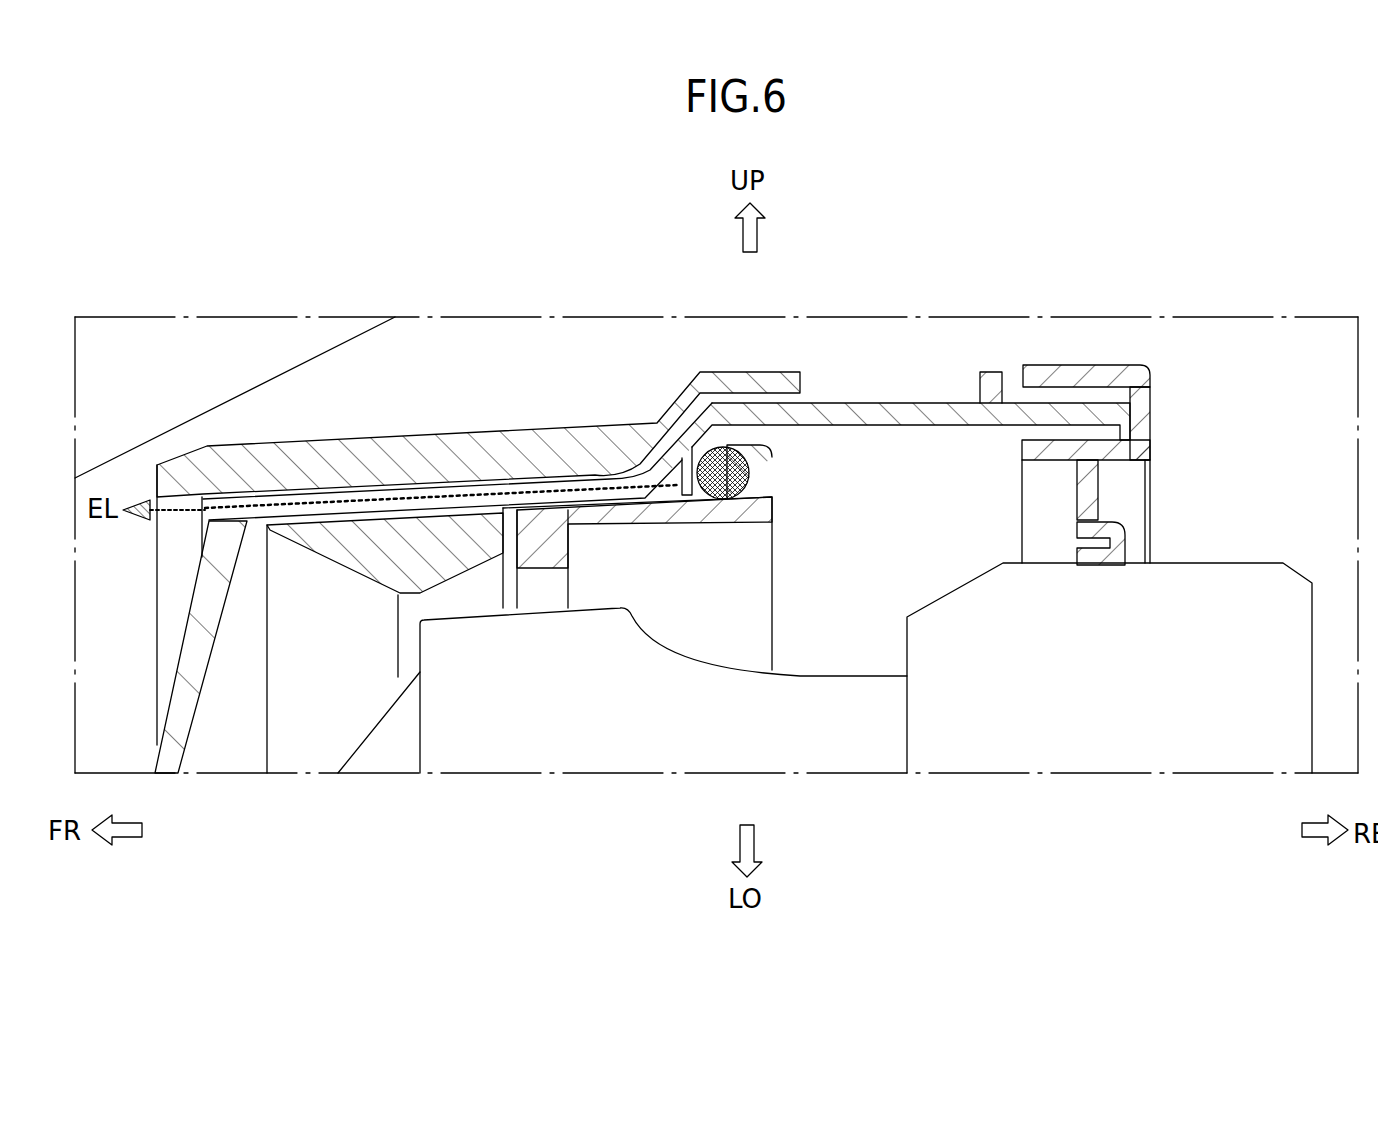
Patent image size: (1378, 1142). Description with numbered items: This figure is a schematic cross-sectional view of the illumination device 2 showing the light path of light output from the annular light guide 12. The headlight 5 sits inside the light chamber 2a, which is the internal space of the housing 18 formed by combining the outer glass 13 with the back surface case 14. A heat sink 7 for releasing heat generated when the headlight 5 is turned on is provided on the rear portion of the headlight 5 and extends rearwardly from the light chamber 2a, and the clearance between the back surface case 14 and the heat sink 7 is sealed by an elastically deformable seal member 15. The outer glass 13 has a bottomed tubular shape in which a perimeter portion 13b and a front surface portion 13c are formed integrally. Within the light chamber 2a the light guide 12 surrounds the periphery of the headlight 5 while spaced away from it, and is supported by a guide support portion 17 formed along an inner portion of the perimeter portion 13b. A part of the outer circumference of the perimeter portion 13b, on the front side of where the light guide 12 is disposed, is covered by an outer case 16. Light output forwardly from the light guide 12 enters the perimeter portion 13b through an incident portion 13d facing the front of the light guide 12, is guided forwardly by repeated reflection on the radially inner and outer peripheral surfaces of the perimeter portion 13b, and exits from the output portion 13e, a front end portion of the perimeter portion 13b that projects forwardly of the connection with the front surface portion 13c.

The illumination device 2 is at (508, 386).
The light chamber 2a is at (304, 716).
The headlight 5 is at (510, 737).
The heat sink 7 is at (1122, 753).
The light guide 12 is at (717, 447).
The outer glass 13 is at (335, 235).
The perimeter portion 13b is at (290, 520).
The front surface portion 13c is at (167, 497).
The incident portion 13d is at (645, 470).
The output portion 13e is at (197, 588).
The back surface case 14 is at (1118, 362).
The seal member 15 is at (1125, 540).
The outer case 16 is at (398, 458).
The guide support portion 17 is at (657, 513).
The housing 18 is at (990, 350).